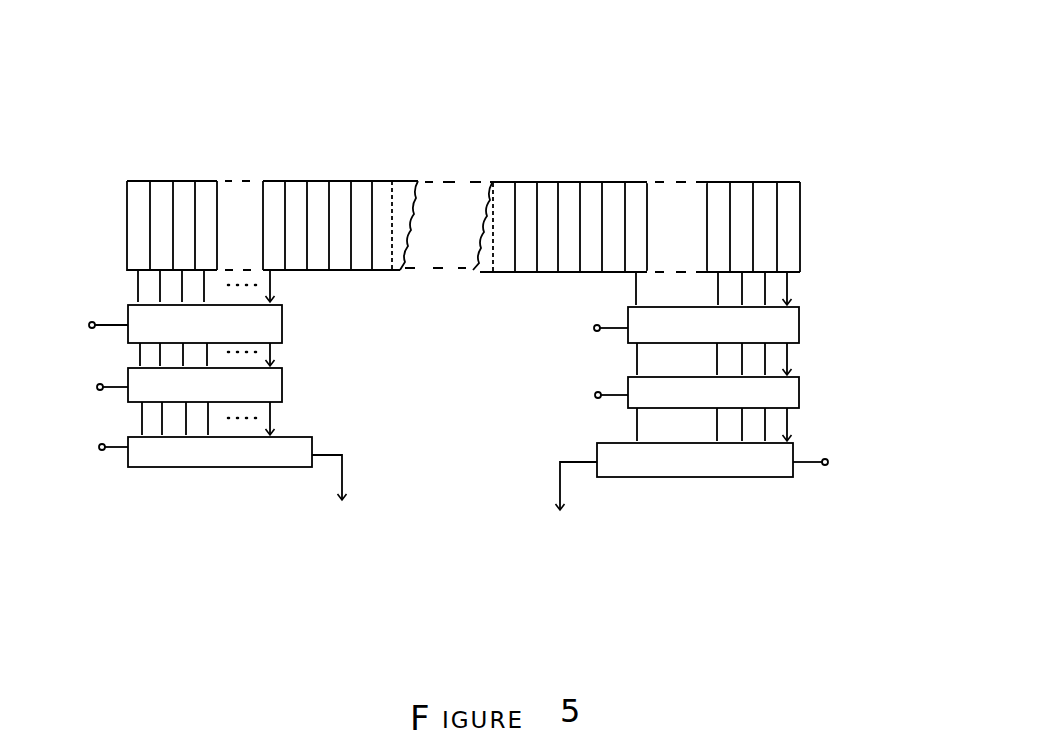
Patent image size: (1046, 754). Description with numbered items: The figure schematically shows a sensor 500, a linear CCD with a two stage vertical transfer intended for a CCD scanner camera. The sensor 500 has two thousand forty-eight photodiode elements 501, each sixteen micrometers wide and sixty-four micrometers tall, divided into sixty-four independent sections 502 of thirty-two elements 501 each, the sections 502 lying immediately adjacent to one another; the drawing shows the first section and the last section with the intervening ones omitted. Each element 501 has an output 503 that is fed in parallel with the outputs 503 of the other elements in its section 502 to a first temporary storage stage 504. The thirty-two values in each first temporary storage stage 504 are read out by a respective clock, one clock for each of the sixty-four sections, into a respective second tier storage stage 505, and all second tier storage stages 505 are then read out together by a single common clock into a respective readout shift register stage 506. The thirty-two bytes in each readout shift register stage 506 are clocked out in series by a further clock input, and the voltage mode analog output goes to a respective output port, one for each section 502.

The sensor 500 is at (730, 43).
The element 501 is at (127, 193).
The section 502 is at (280, 172).
The output 503 is at (116, 291).
The first temporary storage stage 504 is at (293, 326).
The second tier storage stage 505 is at (810, 396).
The readout shift register stage 506 is at (192, 468).